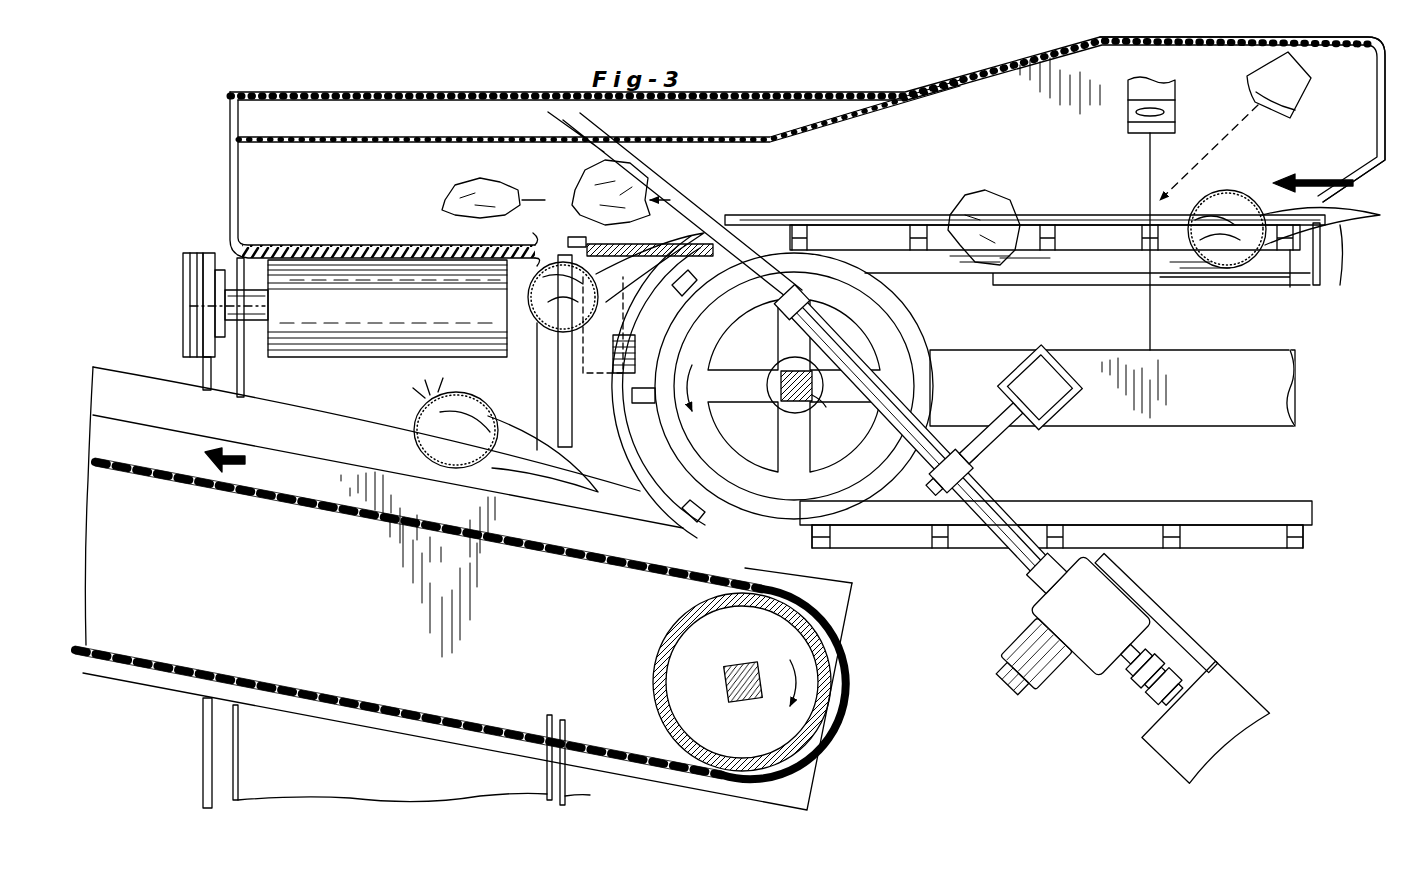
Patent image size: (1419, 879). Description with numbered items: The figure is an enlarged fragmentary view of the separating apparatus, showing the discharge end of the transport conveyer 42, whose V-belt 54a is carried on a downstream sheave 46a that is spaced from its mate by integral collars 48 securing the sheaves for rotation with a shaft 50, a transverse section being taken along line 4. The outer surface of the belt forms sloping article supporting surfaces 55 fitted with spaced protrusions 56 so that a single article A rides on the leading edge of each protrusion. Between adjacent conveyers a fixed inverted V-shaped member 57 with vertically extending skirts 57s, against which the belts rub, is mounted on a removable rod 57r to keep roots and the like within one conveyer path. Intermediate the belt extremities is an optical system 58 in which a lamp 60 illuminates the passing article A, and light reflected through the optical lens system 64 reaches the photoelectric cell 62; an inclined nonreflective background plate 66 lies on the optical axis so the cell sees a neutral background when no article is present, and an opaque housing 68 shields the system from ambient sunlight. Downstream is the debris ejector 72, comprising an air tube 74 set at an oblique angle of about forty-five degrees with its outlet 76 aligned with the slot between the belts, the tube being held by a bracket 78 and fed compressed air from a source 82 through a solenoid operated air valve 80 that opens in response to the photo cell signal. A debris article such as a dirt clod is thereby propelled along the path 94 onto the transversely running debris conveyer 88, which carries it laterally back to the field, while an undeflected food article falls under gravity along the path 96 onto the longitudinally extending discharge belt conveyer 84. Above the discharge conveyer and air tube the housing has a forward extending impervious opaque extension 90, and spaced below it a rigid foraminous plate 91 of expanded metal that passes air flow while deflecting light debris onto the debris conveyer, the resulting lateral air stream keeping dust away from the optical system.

The impervious opaque extension 90 is at (447, 90).
The foraminous plate 91 is at (388, 137).
The debris conveyer 88 is at (345, 243).
The debris path 94 is at (556, 196).
The rod 57r is at (752, 215).
The section line 4- 4 is at (797, 177).
The opaque housing 68 is at (1225, 38).
The photoelectric cell 62 is at (1175, 80).
The optical lens system 64 is at (1162, 111).
The optical system 58 is at (1124, 128).
The incandescent lamp 60 is at (1246, 81).
The inverted V-shaped member 57 is at (1040, 205).
The article supporting surfaces 55 is at (1080, 222).
The protrusions 56 is at (909, 232).
The skirts 57s is at (1322, 236).
The transport conveyer 42 is at (1322, 251).
The downstream sheave 46a is at (905, 320).
The integral collars 48 is at (780, 396).
The shaft 50 is at (822, 400).
The outlet 76 is at (782, 302).
The air tube 74 is at (984, 490).
The debris ejector 72 is at (1016, 455).
The bracket 78 is at (997, 412).
The solenoid operated air valve 80 is at (1102, 611).
The background plate 66 is at (1162, 608).
The compressed air source 82 is at (1217, 741).
The V-belt 54a is at (1194, 501).
The food article path 96 is at (533, 328).
The discharge belt conveyer 84 is at (160, 474).
The article A is at (505, 290).